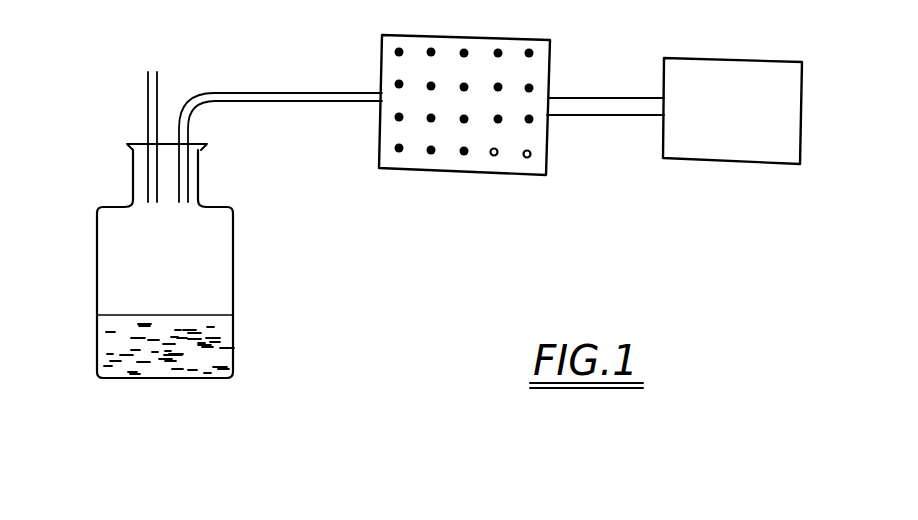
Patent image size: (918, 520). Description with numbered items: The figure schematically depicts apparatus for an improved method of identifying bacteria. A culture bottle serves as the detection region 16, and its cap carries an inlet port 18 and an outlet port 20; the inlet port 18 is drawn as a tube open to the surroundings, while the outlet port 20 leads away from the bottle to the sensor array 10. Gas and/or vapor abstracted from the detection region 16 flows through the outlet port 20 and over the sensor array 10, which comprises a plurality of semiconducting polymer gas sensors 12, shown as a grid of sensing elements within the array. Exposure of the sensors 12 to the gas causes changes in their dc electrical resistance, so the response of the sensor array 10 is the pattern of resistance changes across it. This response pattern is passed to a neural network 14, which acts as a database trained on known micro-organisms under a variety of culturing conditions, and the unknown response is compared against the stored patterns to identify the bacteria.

The sensor array 10 is at (540, 65).
The gas sensor 12 is at (431, 154).
The neural network 14 is at (696, 148).
The detection region 16 is at (226, 267).
The inlet port 18 is at (147, 102).
The outlet port 20 is at (200, 120).